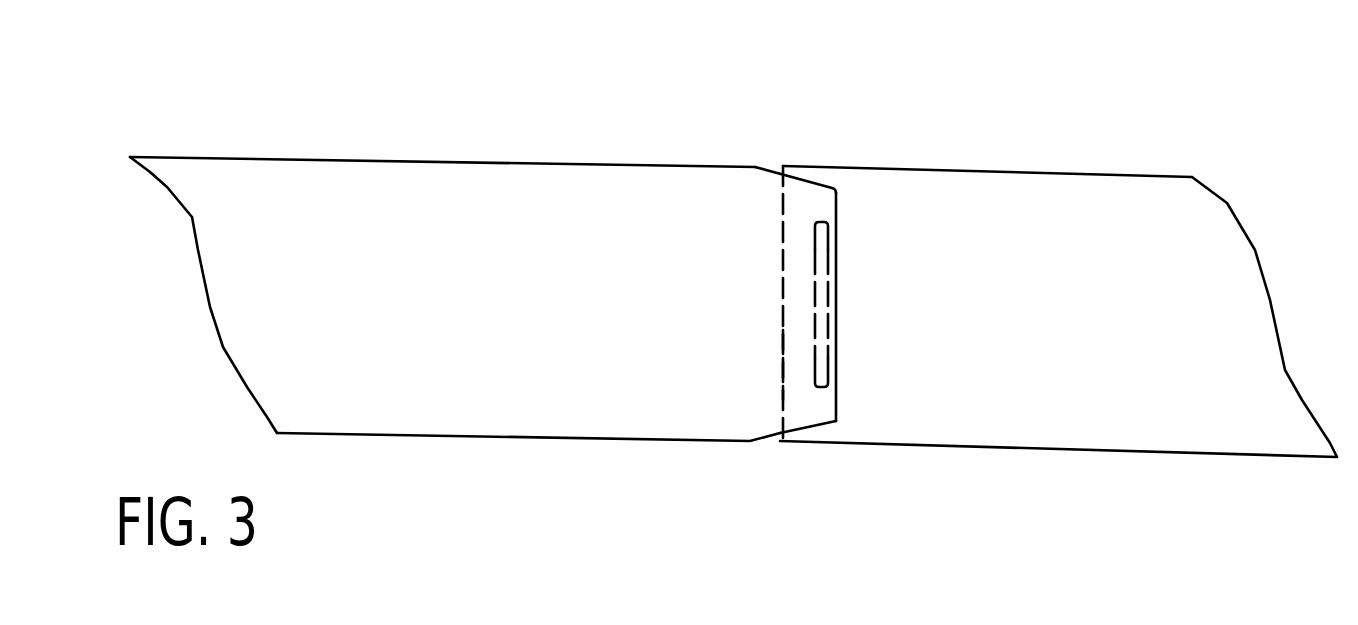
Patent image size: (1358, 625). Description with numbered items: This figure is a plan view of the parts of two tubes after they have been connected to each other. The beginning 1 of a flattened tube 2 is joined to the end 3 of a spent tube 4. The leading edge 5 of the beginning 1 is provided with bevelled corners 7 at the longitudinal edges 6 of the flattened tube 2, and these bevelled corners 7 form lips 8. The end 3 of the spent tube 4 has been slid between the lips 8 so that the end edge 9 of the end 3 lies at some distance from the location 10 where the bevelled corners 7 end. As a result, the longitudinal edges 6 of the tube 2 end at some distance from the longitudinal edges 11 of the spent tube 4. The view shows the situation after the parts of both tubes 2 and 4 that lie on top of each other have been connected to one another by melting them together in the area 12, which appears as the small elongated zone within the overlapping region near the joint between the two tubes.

The beginning 1 is at (805, 413).
The tube 2 is at (500, 437).
The end 3 is at (815, 175).
The spent tube 4 is at (1025, 170).
The leading edge 5 is at (835, 362).
The longitudinal edges 6 is at (387, 158).
The bevelled corners 7 is at (776, 168).
The lips 8 is at (817, 197).
The end edge 9 is at (780, 352).
The location 10 is at (750, 443).
The longitudinal edges 11 is at (1143, 173).
The area 12 is at (817, 243).